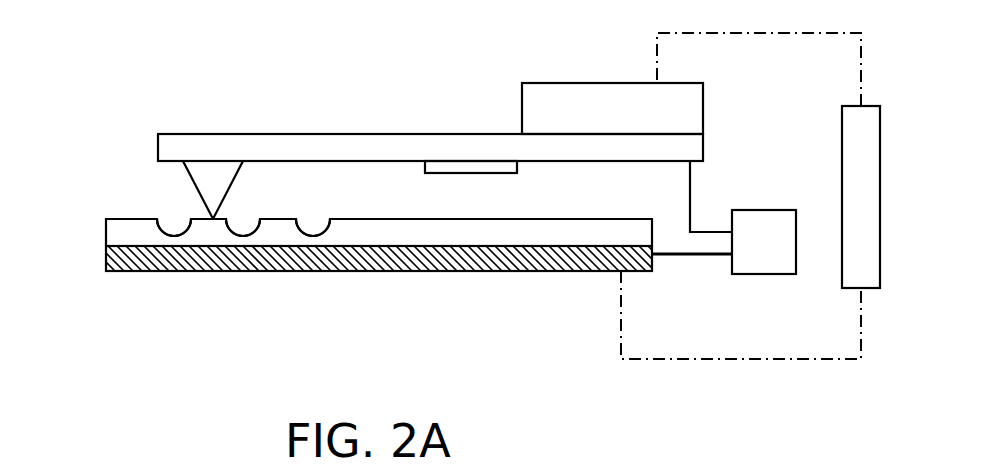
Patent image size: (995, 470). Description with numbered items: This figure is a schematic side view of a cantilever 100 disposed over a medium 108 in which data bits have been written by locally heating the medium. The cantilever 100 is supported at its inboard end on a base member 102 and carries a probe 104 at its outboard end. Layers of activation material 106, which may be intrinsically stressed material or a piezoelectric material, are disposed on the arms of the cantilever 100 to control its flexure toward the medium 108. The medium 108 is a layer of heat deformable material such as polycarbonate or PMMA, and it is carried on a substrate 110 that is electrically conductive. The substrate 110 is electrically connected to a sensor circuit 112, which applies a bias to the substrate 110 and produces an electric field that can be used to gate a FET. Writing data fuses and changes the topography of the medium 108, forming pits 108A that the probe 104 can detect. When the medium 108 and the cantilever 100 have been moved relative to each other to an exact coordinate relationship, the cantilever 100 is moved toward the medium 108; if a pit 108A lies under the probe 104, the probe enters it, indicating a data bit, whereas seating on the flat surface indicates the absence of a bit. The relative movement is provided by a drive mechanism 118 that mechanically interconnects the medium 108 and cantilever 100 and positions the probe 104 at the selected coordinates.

The cantilever 100 is at (237, 143).
The base member 102 is at (583, 88).
The probe 104 is at (205, 187).
The activation material 106 is at (457, 160).
The medium 108 is at (402, 230).
The pit 108A is at (313, 230).
The substrate 110 is at (460, 272).
The sensor circuit 112 is at (764, 262).
The drive mechanism 118 is at (862, 257).